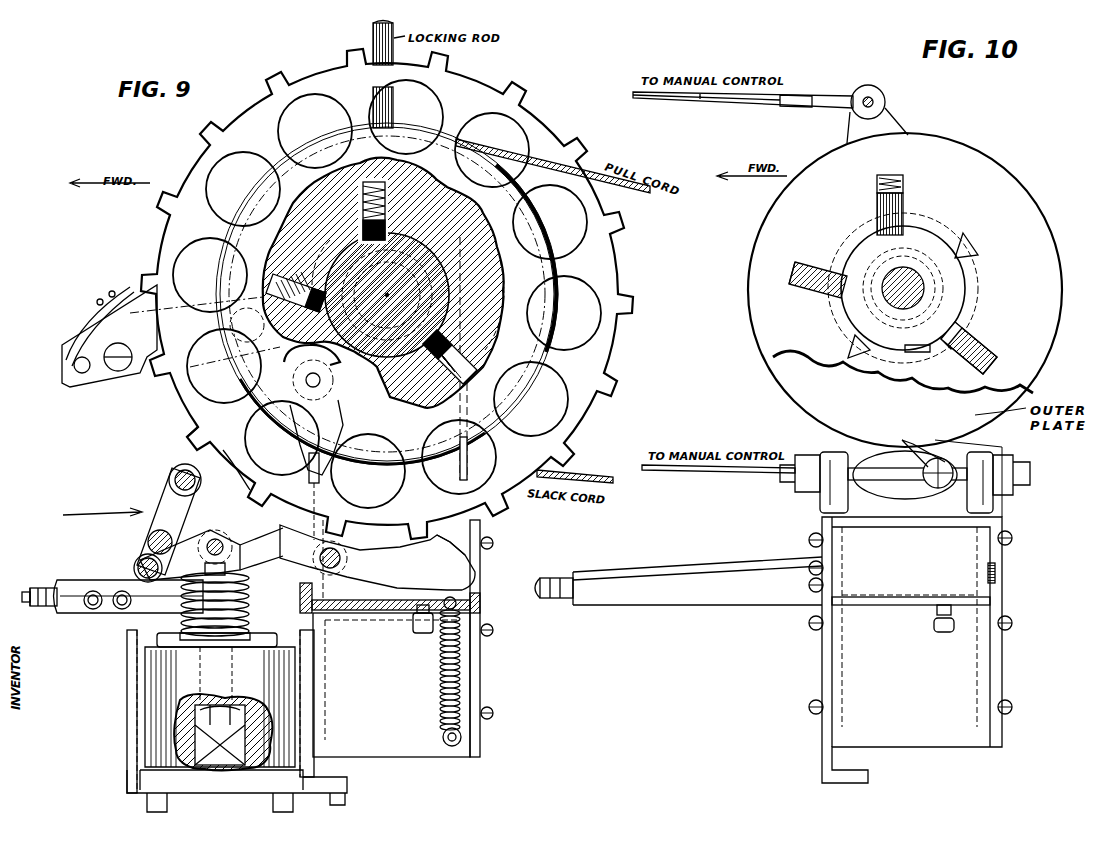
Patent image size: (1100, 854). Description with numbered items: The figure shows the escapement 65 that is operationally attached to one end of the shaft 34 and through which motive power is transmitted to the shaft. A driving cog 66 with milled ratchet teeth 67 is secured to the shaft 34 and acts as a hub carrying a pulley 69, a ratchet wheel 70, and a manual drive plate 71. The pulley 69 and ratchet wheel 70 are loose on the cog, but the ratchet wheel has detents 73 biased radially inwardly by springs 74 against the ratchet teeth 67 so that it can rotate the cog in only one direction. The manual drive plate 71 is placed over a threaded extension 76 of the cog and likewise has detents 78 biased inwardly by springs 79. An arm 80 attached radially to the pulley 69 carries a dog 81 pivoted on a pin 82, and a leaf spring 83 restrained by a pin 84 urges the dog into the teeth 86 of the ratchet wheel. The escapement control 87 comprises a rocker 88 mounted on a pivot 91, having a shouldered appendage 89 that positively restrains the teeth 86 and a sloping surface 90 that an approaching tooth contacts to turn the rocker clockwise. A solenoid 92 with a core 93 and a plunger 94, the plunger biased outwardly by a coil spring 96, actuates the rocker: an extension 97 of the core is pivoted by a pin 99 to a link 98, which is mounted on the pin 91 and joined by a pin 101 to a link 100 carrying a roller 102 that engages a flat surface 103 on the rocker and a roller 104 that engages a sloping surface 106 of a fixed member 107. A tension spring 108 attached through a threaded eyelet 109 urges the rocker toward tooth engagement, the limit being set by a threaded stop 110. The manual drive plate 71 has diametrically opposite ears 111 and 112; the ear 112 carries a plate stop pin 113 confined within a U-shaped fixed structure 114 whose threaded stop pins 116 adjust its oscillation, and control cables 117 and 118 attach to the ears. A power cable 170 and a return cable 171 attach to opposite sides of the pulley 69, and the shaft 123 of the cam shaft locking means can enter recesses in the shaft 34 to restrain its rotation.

In FIG. 10, the shaft 34 is at (865, 247).
In FIG. 9, the escapement 65 is at (140, 253).
In FIG. 9, the driving cog 66 is at (328, 378).
In FIG. 10, the driving cog 66 is at (968, 280).
In FIG. 9, the ratchet teeth 67 is at (470, 212).
In FIG. 10, the ratchet teeth 67 is at (950, 250).
In FIG. 9, the pulley 69 is at (520, 227).
In FIG. 9, the ratchet wheel 70 is at (600, 270).
In FIG. 10, the manual drive plate 71 is at (1020, 240).
In FIG. 9, the detents 73 is at (388, 226).
In FIG. 9, the springs 74 is at (395, 178).
In FIG. 10, the threaded extension 76 is at (850, 272).
In FIG. 10, the detents 78 is at (903, 212).
In FIG. 10, the springs 79 is at (905, 184).
In FIG. 9, the arm 80 is at (105, 380).
In FIG. 9, the dog 81 is at (128, 318).
In FIG. 9, the pin 82 is at (120, 360).
In FIG. 9, the leaf spring 83 is at (90, 338).
In FIG. 9, the pin 84 is at (78, 368).
In FIG. 9, the teeth 86 is at (188, 436).
In FIG. 9, the escapement control 87 is at (86, 517).
In FIG. 9, the rocker 88 is at (400, 568).
In FIG. 9, the shouldered appendage 89 is at (260, 452).
In FIG. 9, the sloping surface 90 is at (473, 565).
In FIG. 9, the pivot 91 is at (338, 565).
In FIG. 9, the solenoid 92 is at (103, 693).
In FIG. 9, the core 93 is at (173, 727).
In FIG. 9, the plunger 94 is at (232, 700).
In FIG. 9, the coil spring 96 is at (250, 598).
In FIG. 9, the extension 97 is at (200, 548).
In FIG. 9, the link 98 is at (205, 574).
In FIG. 9, the pin 99 is at (218, 545).
In FIG. 9, the link 100 is at (165, 512).
In FIG. 9, the pin 101 is at (148, 544).
In FIG. 9, the roller 102 is at (178, 475).
In FIG. 9, the flat surface 103 is at (172, 486).
In FIG. 9, the roller 104 is at (134, 567).
In FIG. 9, the sloping surface 106 is at (192, 631).
In FIG. 9, the fixed member 107 is at (74, 614).
In FIG. 9, the tension spring 108 is at (462, 672).
In FIG. 9, the threaded eyelet 109 is at (480, 607).
In FIG. 9, the threaded stop 110 is at (413, 636).
In FIG. 10, the ear 111 is at (885, 132).
In FIG. 10, the ear 112 is at (968, 440).
In FIG. 10, the plate stop pin 113 is at (930, 462).
In FIG. 10, the U-shaped fixed structure 114 is at (993, 505).
In FIG. 10, the threaded stop pins 116 is at (850, 480).
In FIG. 10, the control cable 117 is at (740, 100).
In FIG. 10, the control cable 118 is at (720, 472).
In FIG. 9, the shaft 123 is at (373, 43).
In FIG. 9, the power cable 170 is at (646, 190).
In FIG. 9, the return cable 171 is at (587, 470).